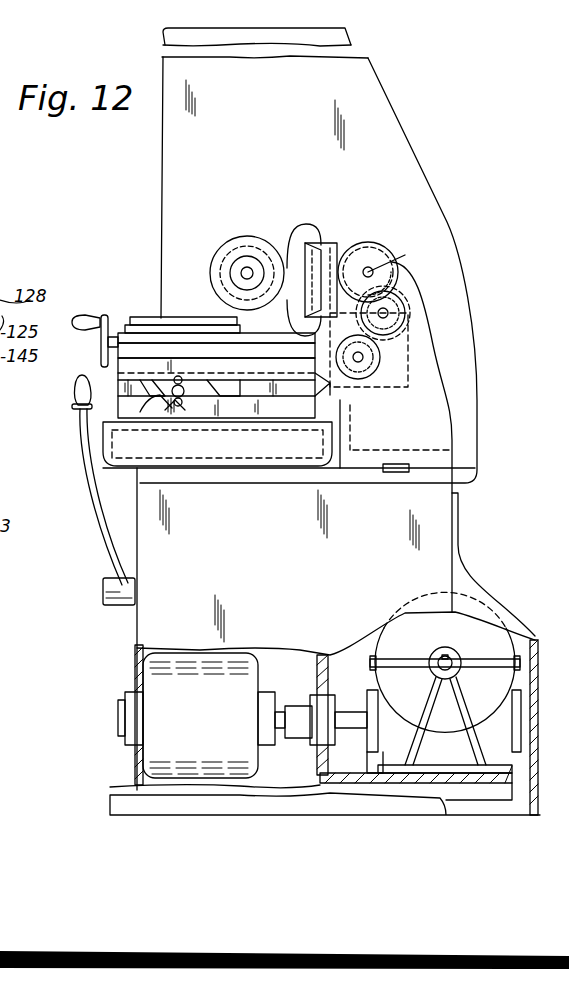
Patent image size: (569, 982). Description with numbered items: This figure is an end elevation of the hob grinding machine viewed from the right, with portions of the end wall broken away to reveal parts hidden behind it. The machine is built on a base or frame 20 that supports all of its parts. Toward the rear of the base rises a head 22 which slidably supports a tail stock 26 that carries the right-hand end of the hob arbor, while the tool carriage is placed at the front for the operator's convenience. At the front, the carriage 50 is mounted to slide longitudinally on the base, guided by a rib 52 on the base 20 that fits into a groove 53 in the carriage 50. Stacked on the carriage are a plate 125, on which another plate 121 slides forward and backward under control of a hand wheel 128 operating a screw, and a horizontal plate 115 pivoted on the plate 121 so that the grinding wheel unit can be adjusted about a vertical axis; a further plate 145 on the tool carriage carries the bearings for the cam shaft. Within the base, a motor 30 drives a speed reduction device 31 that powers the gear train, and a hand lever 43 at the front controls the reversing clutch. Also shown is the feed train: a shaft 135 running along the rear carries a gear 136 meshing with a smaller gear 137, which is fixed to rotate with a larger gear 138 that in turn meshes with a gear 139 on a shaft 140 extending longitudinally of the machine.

The base 20 is at (321, 421).
The head 22 is at (318, 252).
The tail stock 26 is at (282, 250).
The motor 30 is at (242, 715).
The speed reduction device 31 is at (444, 682).
The hand lever 43 is at (100, 548).
The carriage 50 is at (238, 405).
The rib 52 is at (172, 410).
The groove 53 is at (141, 412).
The horizontal plate 115 is at (186, 320).
The plate 121 is at (238, 348).
The plate 125 is at (216, 353).
The hand wheel 128 is at (104, 316).
The shaft 135 is at (406, 268).
The gear 136 is at (368, 257).
The gear 137 is at (400, 300).
The gear 138 is at (408, 316).
The gear 139 is at (360, 372).
The shaft 140 is at (370, 362).
The plate 145 is at (224, 388).